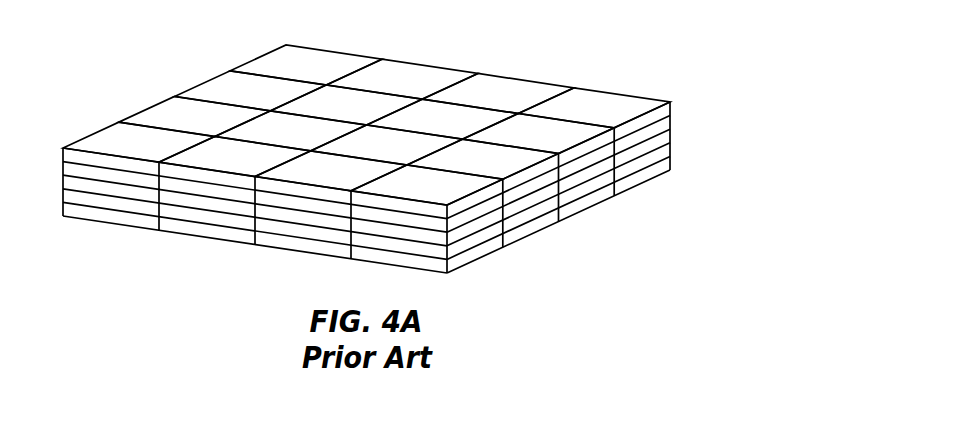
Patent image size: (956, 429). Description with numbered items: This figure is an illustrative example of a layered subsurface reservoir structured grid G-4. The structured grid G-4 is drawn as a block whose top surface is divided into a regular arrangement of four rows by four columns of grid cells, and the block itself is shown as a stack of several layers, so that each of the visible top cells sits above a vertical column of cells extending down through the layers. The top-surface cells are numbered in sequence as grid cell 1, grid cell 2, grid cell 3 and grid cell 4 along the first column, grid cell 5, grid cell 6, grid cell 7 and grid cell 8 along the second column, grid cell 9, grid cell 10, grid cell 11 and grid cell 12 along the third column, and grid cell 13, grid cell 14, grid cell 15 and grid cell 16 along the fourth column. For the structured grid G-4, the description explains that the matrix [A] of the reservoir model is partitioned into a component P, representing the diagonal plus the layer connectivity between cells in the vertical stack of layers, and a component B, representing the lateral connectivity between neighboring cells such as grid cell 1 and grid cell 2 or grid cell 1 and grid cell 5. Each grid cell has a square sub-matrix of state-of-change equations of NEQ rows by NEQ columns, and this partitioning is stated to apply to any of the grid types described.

The structured grid G-4 is at (366, 138).
The stack position 1 is at (306, 65).
The stack position 2 is at (251, 91).
The stack position 3 is at (195, 117).
The stack position 4 is at (139, 142).
The stack position 5 is at (402, 79).
The stack position 6 is at (347, 105).
The stack position 7 is at (291, 131).
The stack position 8 is at (235, 157).
The stack position 9 is at (498, 94).
The stack position 10 is at (443, 119).
The stack position 11 is at (387, 145).
The stack position 12 is at (331, 171).
The stack position 13 is at (594, 108).
The stack position 14 is at (539, 134).
The stack position 15 is at (483, 159).
The stack position 16 is at (427, 185).